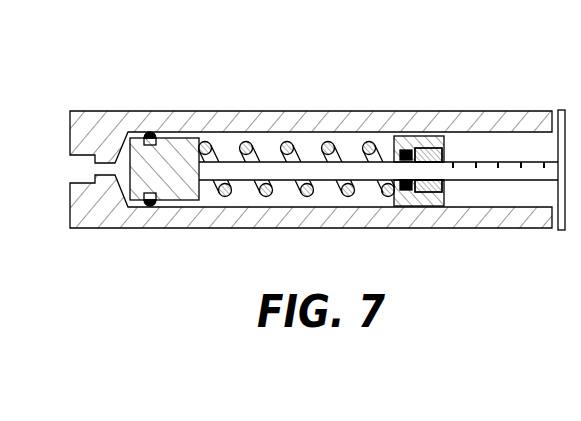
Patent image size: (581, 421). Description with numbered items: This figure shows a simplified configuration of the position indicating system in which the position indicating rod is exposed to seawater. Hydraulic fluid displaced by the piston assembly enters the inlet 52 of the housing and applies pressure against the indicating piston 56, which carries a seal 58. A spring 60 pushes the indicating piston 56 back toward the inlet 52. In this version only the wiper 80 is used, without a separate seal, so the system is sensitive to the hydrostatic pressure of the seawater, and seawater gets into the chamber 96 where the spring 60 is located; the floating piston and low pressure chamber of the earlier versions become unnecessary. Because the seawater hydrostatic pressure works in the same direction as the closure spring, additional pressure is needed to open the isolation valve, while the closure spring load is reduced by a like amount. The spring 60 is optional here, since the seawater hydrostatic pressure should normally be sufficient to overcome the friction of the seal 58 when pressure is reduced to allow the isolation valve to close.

The inlet 52 is at (73, 167).
The indicating piston 56 is at (168, 152).
The seal 58 is at (150, 134).
The spring 60 is at (328, 145).
The wiper 80 is at (418, 150).
The chamber 96 is at (262, 143).